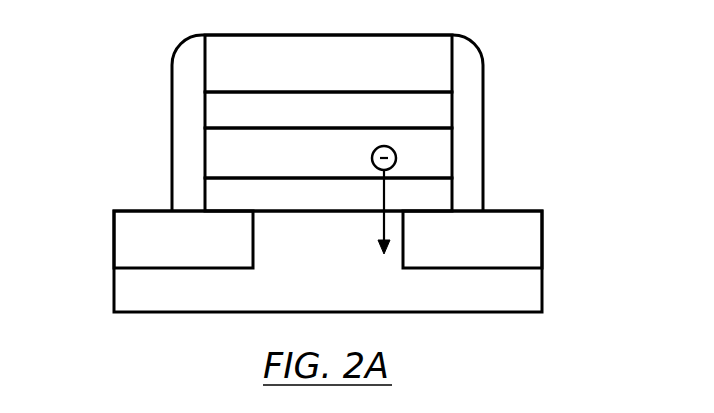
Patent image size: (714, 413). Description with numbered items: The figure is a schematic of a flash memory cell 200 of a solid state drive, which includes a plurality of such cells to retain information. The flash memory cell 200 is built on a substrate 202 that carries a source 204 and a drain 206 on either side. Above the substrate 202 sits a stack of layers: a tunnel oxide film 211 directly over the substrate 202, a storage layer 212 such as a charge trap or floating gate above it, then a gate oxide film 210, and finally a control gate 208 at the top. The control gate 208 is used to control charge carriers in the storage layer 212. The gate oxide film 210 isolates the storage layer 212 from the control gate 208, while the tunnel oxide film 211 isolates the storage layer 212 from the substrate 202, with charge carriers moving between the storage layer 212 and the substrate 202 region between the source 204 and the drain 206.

The flash memory cell 200 is at (132, 99).
The substrate 202 is at (328, 261).
The source 204 is at (183, 239).
The drain 206 is at (472, 239).
The control gate 208 is at (328, 63).
The gate oxide film 210 is at (328, 110).
The tunnel oxide film 211 is at (328, 195).
The storage layer 212 is at (328, 191).